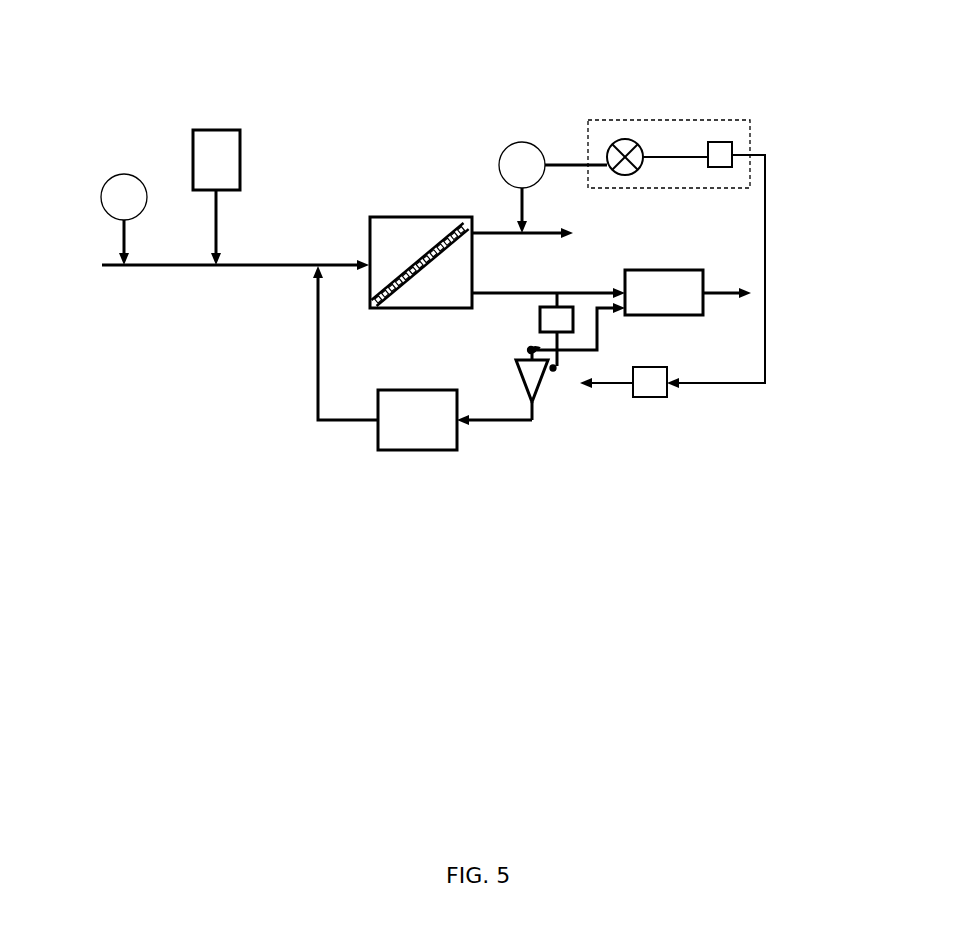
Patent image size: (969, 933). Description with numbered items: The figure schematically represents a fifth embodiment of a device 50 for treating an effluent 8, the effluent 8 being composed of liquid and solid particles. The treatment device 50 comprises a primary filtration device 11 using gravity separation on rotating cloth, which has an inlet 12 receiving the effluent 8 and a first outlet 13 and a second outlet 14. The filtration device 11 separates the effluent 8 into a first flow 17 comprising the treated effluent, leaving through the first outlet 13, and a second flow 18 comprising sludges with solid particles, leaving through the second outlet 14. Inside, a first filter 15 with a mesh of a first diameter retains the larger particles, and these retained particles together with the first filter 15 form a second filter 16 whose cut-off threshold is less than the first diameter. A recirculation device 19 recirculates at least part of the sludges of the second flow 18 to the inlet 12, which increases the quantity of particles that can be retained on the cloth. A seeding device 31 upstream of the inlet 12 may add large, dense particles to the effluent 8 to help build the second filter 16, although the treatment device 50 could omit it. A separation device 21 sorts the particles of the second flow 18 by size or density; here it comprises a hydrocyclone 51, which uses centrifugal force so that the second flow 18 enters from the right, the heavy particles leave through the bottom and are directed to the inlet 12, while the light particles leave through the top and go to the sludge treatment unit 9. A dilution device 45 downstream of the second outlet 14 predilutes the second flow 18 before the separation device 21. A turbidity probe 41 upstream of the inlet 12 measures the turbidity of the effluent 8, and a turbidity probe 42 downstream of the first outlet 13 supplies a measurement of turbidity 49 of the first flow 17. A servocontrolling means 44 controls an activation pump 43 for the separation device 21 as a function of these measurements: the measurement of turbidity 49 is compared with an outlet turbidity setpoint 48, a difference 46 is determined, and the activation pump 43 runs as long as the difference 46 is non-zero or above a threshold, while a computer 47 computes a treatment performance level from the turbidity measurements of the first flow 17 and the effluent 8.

The effluent 8 is at (112, 263).
The sludge treatment unit 9 is at (672, 269).
The primary filtration device 11 is at (383, 217).
The inlet 12 is at (366, 261).
The first outlet 13 is at (474, 232).
The second outlet 14 is at (473, 305).
The first filter 15 is at (417, 268).
The second filter 16 is at (468, 224).
The first flow 17 is at (673, 217).
The second flow 18 is at (507, 292).
The recirculation device 19 is at (458, 440).
The separation device 21 is at (578, 421).
The seeding device 31 is at (218, 129).
The turbidity probe 41 is at (124, 174).
The turbidity probe 42 is at (525, 142).
The activation pump 43 is at (667, 397).
The servocontrolling means 44 is at (710, 120).
The dilution device 45 is at (574, 311).
The difference 46 is at (657, 142).
The computer 47 is at (727, 142).
The outlet turbidity setpoint 48 is at (599, 108).
The measurement of turbidity 49 is at (557, 162).
The treatment device 50 is at (192, 31).
The hydrocyclone 51 is at (565, 388).